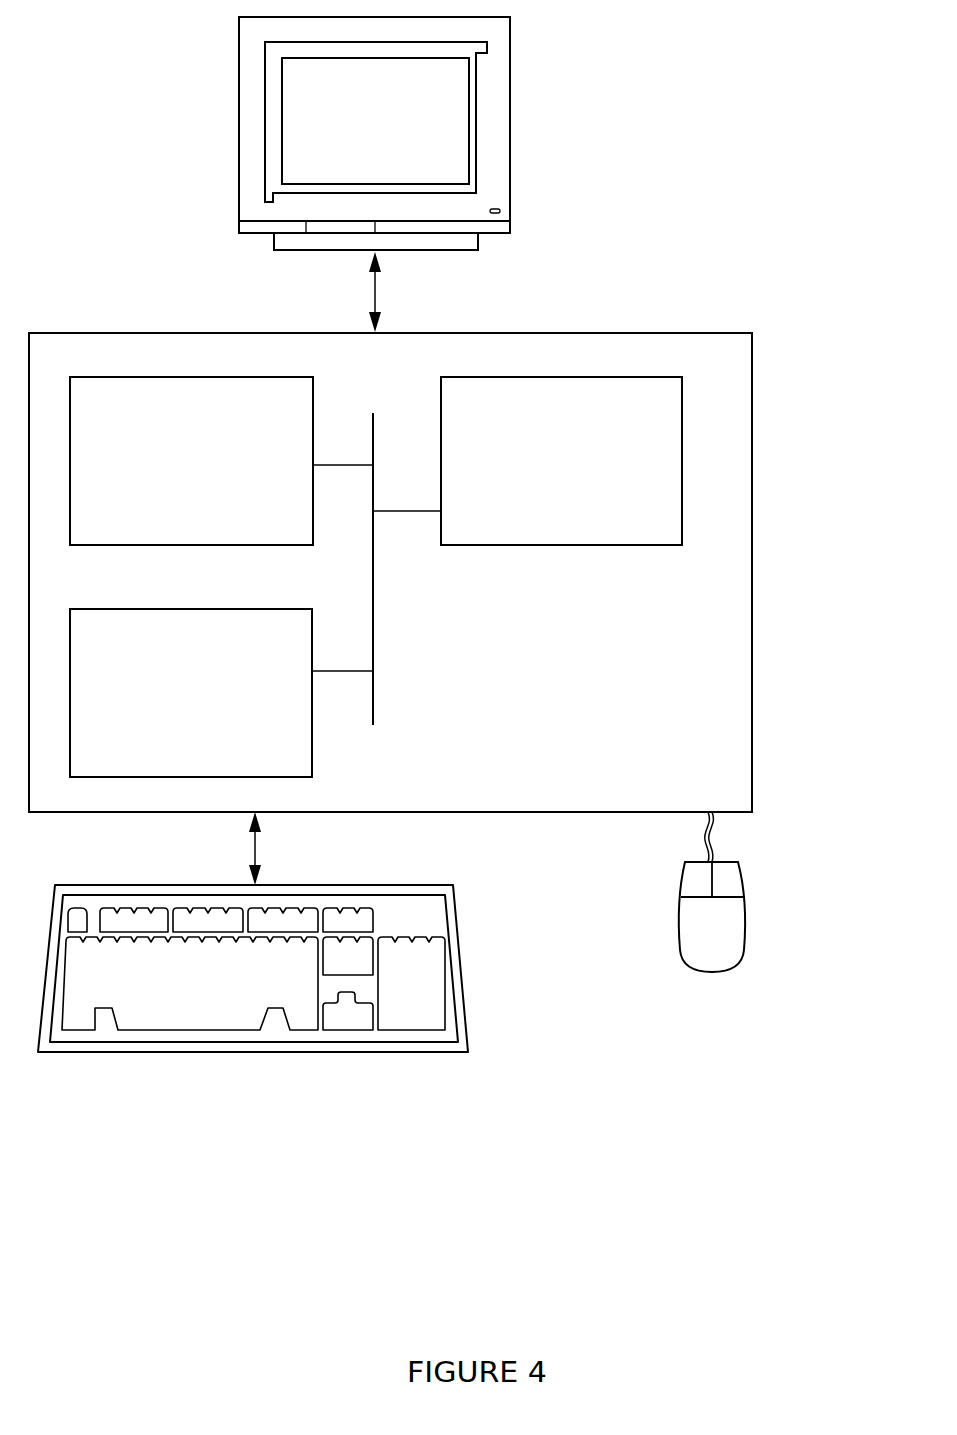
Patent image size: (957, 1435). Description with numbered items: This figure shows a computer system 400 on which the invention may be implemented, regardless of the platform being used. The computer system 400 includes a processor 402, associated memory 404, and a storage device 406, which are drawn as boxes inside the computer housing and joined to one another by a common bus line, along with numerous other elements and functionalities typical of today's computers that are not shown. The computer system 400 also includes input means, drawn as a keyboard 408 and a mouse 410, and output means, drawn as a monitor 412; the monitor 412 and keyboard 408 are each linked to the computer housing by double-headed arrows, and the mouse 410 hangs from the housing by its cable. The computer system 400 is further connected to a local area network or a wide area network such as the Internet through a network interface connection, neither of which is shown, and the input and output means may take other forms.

The computer system 400 is at (725, 198).
The processor 402 is at (556, 475).
The memory 404 is at (170, 473).
The storage device 406 is at (165, 707).
The keyboard 408 is at (160, 1007).
The mouse 410 is at (690, 938).
The monitor 412 is at (353, 138).